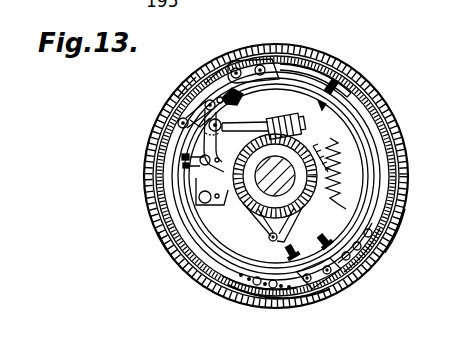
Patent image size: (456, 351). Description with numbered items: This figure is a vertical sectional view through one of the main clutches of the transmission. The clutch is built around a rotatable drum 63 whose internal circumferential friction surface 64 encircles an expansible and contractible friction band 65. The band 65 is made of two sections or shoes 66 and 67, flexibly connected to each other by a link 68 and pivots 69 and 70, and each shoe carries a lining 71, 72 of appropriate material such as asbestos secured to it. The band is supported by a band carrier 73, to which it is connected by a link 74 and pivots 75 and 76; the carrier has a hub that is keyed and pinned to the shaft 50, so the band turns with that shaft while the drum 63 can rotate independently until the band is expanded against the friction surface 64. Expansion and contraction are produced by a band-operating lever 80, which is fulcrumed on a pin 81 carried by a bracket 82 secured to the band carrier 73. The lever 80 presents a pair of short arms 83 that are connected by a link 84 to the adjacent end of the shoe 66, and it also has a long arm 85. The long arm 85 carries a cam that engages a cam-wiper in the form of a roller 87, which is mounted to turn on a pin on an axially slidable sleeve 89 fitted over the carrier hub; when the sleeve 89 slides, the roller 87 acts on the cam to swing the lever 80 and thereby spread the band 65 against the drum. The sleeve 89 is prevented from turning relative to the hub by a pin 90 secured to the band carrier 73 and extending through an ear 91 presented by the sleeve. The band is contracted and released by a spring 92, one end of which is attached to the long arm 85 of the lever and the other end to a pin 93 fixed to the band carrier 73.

The shaft 50 is at (294, 172).
The rotatable drum 63 is at (212, 68).
The internal circumferential friction surface 64 is at (186, 82).
The friction band 65 is at (226, 286).
The shoe 66 is at (170, 237).
The shoe 67 is at (402, 187).
The link 68 is at (346, 290).
The pivot 69 is at (322, 295).
The pivot 70 is at (343, 282).
The lining 71 is at (176, 254).
The lining 72 is at (391, 228).
The band carrier 73 is at (353, 146).
The link 74 is at (244, 64).
The pivot 75 is at (236, 64).
The pivot 76 is at (266, 65).
The band-operating lever 80 is at (224, 91).
The pin 81 is at (205, 133).
The bracket 82 is at (212, 201).
The short arms 83 is at (176, 104).
The link 84 is at (171, 114).
The long arm 85 is at (266, 120).
The roller 87 is at (292, 118).
The sleeve 89 is at (258, 209).
The pin 90 is at (269, 240).
The ear 91 is at (295, 233).
The spring 92 is at (316, 156).
The pin 93 is at (342, 173).